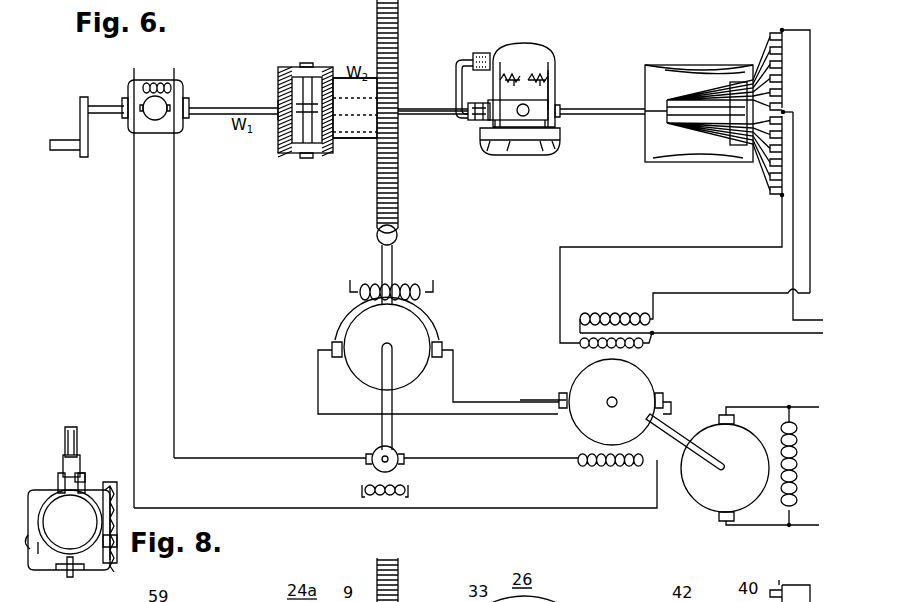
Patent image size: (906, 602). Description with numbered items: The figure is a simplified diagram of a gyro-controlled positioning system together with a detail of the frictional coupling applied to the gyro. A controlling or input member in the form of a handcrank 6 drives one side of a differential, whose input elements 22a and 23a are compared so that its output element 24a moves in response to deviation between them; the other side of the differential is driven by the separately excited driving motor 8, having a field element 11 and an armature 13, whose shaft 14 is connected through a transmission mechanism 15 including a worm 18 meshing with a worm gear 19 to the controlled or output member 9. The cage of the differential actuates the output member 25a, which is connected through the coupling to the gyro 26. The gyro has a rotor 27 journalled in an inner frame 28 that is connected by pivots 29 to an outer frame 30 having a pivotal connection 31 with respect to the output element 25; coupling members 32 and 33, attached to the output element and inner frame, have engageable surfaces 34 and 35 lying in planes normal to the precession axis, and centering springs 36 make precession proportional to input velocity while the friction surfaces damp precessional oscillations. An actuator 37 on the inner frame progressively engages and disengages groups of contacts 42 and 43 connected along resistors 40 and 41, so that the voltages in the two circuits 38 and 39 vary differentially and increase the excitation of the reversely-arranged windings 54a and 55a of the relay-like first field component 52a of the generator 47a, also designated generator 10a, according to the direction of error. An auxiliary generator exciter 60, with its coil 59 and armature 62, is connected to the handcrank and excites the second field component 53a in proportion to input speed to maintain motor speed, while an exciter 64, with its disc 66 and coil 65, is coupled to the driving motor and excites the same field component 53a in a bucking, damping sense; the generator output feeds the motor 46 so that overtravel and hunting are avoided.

In FIG. 6, the input member 6 is at (95, 106).
In FIG. 6, the coil 59 is at (154, 82).
In FIG. 6, the auxiliary generator exciter 60 is at (183, 92).
In FIG. 6, the armature disc 62 is at (157, 117).
In FIG. 6, the input element 22a is at (278, 130).
In FIG. 6, the output element of differential 24a is at (324, 55).
In FIG. 6, the input element 23a is at (333, 76).
In FIG. 6, the output member 9 is at (355, 140).
In FIG. 6, the worm gear 19 is at (398, 175).
In FIG. 6, the transmission mechanism 15 is at (437, 219).
In FIG. 6, the worm 18 is at (378, 230).
In FIG. 6, the shaft 14 is at (392, 256).
In FIG. 6, the field element 11 is at (408, 286).
In FIG. 6, the armature 13 is at (420, 332).
In FIG. 6, the driving motor 8 is at (345, 305).
In FIG. 6, the disc 66 is at (398, 450).
In FIG. 6, the auxiliary generator exciter 64 is at (400, 464).
In FIG. 6, the coil 65 is at (363, 489).
In FIG. 6, the second field component 53a is at (616, 466).
In FIG. 6, the generator 10a is at (649, 377).
In FIG. 6, the generator 47a is at (571, 376).
In FIG. 6, the motor 46 is at (756, 426).
In FIG. 6, the gyro 26 is at (532, 39).
In FIG. 8, the gyro 26 is at (80, 533).
In FIG. 6, the centering springs 36 is at (542, 76).
In FIG. 8, the centering springs 36 is at (112, 553).
In FIG. 6, the inner frame 28 is at (552, 62).
In FIG. 6, the outer frame 30 is at (490, 134).
In FIG. 8, the outer frame 30 is at (35, 540).
In FIG. 6, the pivots 29 is at (526, 118).
In FIG. 6, the rotor 27 is at (545, 156).
In FIG. 8, the rotor 27 is at (63, 568).
In FIG. 6, the coupling member 33 is at (484, 53).
In FIG. 8, the coupling member 33 is at (103, 484).
In FIG. 6, the coupling member 32 is at (458, 94).
In FIG. 8, the coupling member 32 is at (77, 460).
In FIG. 6, the pivotal connection 31 is at (478, 120).
In FIG. 6, the output member 25a is at (432, 116).
In FIG. 6, the actuator 37 is at (606, 111).
In FIG. 8, the actuator 37 is at (73, 577).
In FIG. 6, the group of contacts 42 is at (669, 97).
In FIG. 6, the group of contacts 43 is at (668, 127).
In FIG. 6, the resistor 40 is at (768, 57).
In FIG. 6, the resistor 41 is at (770, 168).
In FIG. 6, the circuit 38 is at (737, 293).
In FIG. 6, the circuit 39 is at (661, 248).
In FIG. 6, the relay 52a is at (610, 307).
In FIG. 6, the winding 54a is at (622, 318).
In FIG. 6, the winding 55a is at (644, 347).
In FIG. 8, the output element 25 is at (73, 428).
In FIG. 8, the engageable surface 34 is at (60, 478).
In FIG. 8, the engageable surface 35 is at (88, 476).